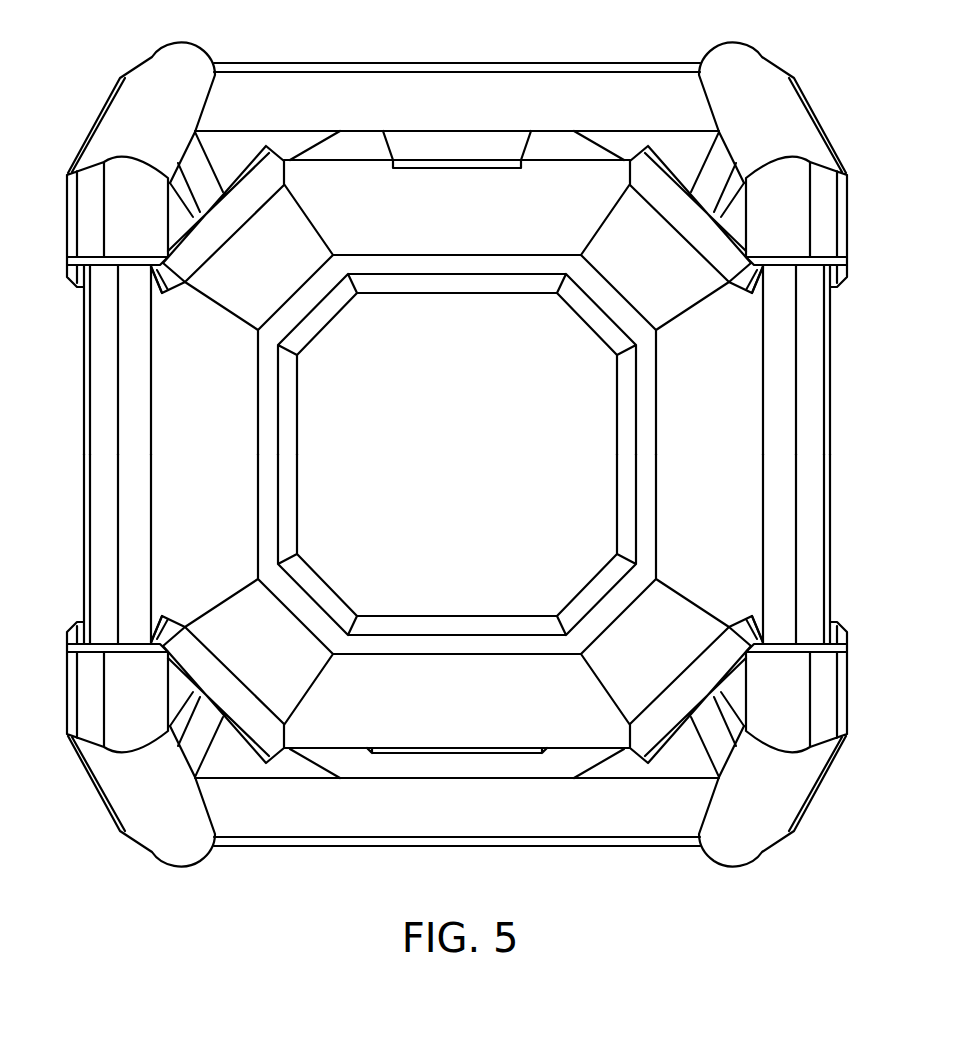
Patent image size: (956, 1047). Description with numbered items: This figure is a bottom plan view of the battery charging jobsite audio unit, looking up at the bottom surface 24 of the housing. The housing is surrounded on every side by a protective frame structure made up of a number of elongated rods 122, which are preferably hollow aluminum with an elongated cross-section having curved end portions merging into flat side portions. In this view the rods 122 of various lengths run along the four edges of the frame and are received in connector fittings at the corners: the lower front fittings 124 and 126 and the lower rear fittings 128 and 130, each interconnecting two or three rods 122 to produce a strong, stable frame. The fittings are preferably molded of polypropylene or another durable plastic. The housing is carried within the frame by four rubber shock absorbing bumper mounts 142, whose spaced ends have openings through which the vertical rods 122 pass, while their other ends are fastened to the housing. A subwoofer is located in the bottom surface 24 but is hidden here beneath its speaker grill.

The bottom surface 24 is at (444, 472).
The elongated rods 122 is at (458, 88).
The lower front fitting 124 is at (727, 845).
The lower front fitting 126 is at (183, 847).
The lower rear fitting 128 is at (752, 82).
The lower rear fitting 130 is at (152, 92).
The shock absorbing bumper mounts 142 is at (200, 173).